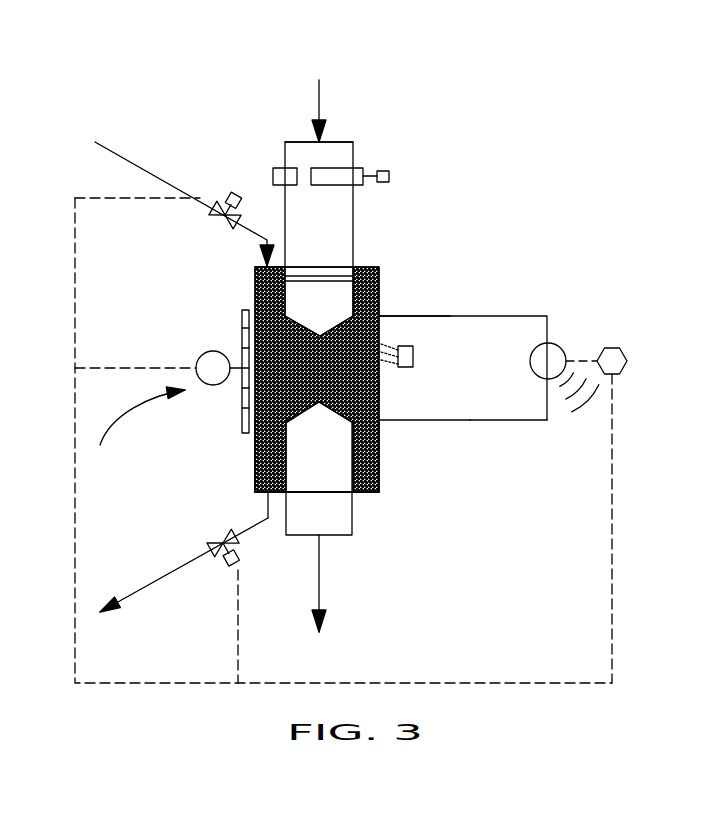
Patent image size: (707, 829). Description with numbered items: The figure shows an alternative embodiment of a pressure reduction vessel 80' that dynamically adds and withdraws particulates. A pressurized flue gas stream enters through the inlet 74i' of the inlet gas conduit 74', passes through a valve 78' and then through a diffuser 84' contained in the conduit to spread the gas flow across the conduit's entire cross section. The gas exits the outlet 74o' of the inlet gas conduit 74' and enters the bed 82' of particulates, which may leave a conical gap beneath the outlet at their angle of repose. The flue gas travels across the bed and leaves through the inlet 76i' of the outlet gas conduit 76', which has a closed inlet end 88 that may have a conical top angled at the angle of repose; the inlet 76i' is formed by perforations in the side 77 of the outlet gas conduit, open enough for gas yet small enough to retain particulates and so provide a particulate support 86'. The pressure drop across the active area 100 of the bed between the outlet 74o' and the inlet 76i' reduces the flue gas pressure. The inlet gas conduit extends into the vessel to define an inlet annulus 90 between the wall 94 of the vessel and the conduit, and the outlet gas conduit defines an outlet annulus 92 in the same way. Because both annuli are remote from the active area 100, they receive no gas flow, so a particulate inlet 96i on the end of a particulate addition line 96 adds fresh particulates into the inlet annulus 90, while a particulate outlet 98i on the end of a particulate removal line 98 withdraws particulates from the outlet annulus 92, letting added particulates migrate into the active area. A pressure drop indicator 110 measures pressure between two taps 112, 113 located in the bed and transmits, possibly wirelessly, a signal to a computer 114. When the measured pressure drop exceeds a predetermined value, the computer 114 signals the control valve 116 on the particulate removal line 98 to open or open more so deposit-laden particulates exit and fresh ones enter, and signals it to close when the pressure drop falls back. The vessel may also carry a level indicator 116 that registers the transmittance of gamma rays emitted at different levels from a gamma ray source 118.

The inlet gas conduit 74' is at (334, 198).
The inlet of the inlet gas conduit 74i' is at (283, 128).
The outlet of the inlet gas conduit 74o' is at (278, 309).
The outlet gas conduit 76' is at (345, 527).
The inlet of the outlet gas conduit 76i' is at (272, 430).
The side of the outlet gas conduit 77 is at (380, 462).
The valve 78' is at (292, 419).
The pressure reduction vessel 80' is at (343, 440).
The bed of particulates 82' is at (414, 384).
The diffuser 84' is at (363, 250).
The particulate support 86' is at (425, 457).
The closed inlet end 88 is at (380, 403).
The inlet annulus 90 is at (380, 283).
The outlet annulus 92 is at (257, 470).
The wall of the vessel 94 is at (380, 487).
The particulate addition line 96 is at (132, 162).
The particulate inlet 96i is at (255, 270).
The particulate removal line 98 is at (184, 578).
The particulate outlet 98i is at (268, 498).
The active area 100 is at (380, 340).
The pressure drop indicator 110 is at (558, 344).
The tap 112 is at (517, 316).
The tap 113 is at (530, 421).
The computer 114 is at (622, 350).
The control valve 116 is at (223, 351).
The gamma ray source 118 is at (413, 357).